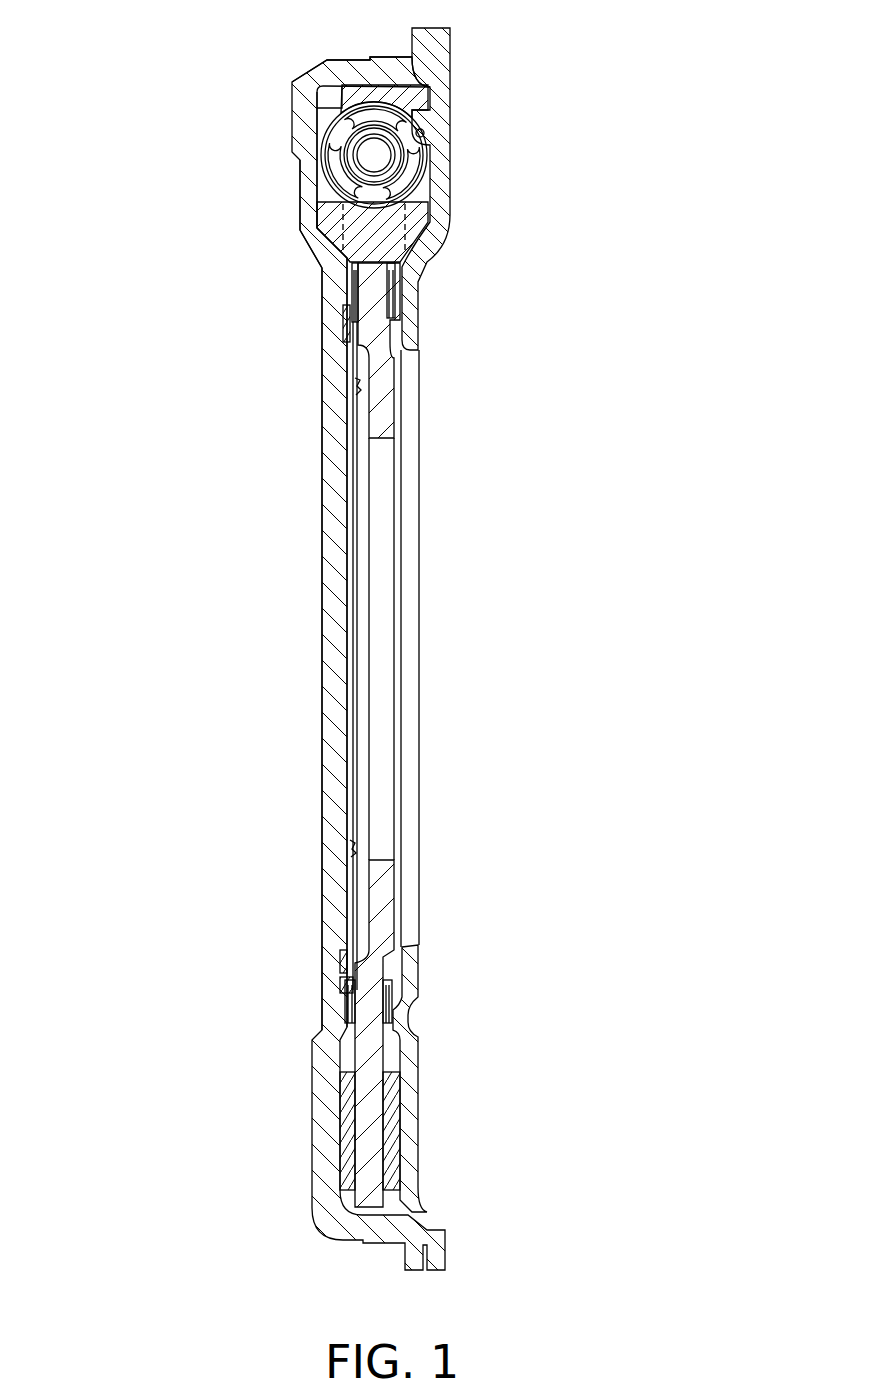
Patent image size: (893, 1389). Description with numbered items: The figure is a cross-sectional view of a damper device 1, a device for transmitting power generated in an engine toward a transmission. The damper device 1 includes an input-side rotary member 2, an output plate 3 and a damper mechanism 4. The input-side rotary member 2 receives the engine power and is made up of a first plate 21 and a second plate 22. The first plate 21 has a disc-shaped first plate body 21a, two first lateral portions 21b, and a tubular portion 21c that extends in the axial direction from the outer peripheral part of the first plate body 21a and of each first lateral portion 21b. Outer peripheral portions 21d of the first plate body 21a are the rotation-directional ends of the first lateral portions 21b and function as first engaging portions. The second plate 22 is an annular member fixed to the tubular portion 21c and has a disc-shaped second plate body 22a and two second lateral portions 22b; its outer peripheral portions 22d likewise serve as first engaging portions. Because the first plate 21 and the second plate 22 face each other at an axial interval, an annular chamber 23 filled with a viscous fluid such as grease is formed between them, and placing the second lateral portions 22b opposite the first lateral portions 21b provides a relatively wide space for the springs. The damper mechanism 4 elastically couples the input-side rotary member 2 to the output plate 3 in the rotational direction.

The damper device 1 is at (310, 635).
The input-side rotary member 2 is at (373, 635).
The output plate 3 is at (397, 403).
The damper mechanism 4 is at (375, 82).
The first plate 21 is at (318, 635).
The first plate body 21a is at (330, 352).
The first lateral portions 21b is at (310, 213).
The tubular portion 21c is at (345, 72).
The outer peripheral portions of the first plate body 21d is at (302, 232).
The second plate 22 is at (440, 620).
The second plate body 22a is at (417, 312).
The second lateral portions 22b is at (443, 172).
The outer peripheral portions of the second plate body 22d is at (440, 214).
The annular chamber 23 is at (423, 137).